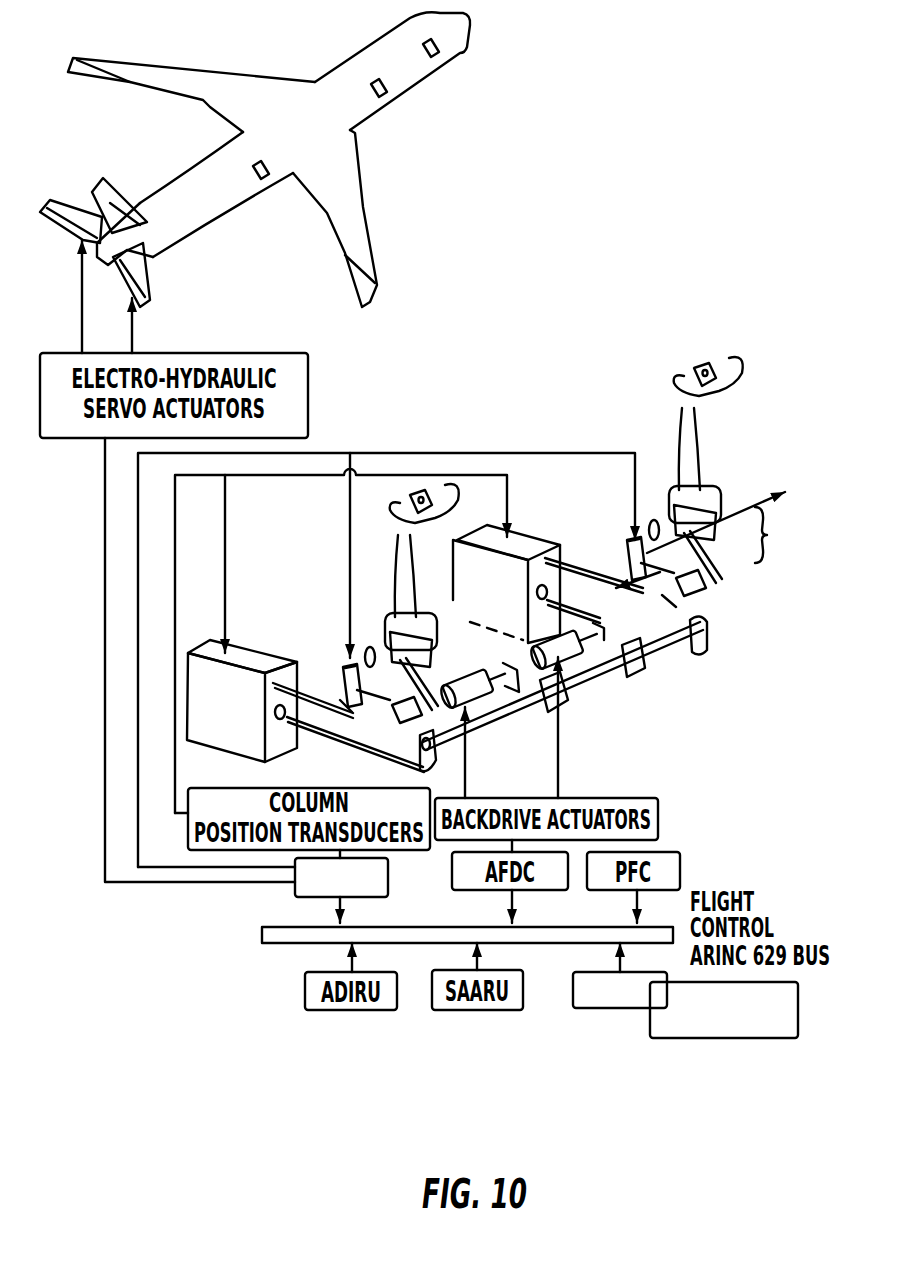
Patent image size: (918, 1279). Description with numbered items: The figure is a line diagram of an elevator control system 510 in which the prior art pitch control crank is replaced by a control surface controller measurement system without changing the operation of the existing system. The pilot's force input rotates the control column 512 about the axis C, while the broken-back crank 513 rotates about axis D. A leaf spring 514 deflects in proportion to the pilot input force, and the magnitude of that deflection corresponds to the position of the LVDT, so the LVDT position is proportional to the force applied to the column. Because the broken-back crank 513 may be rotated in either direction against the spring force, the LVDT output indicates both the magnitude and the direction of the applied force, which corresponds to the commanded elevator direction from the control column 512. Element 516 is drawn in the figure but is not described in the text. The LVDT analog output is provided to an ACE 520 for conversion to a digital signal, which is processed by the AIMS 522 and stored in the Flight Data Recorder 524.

The elevator control system 510 is at (570, 348).
The control column 512 is at (410, 500).
The broken-back crank 513 is at (337, 697).
The leaf spring 514 is at (468, 693).
The column position transducer 516 is at (345, 690).
The ACE 520 is at (293, 892).
The AIMS 522 is at (602, 1010).
The Flight Data Recorder 524 is at (732, 1038).